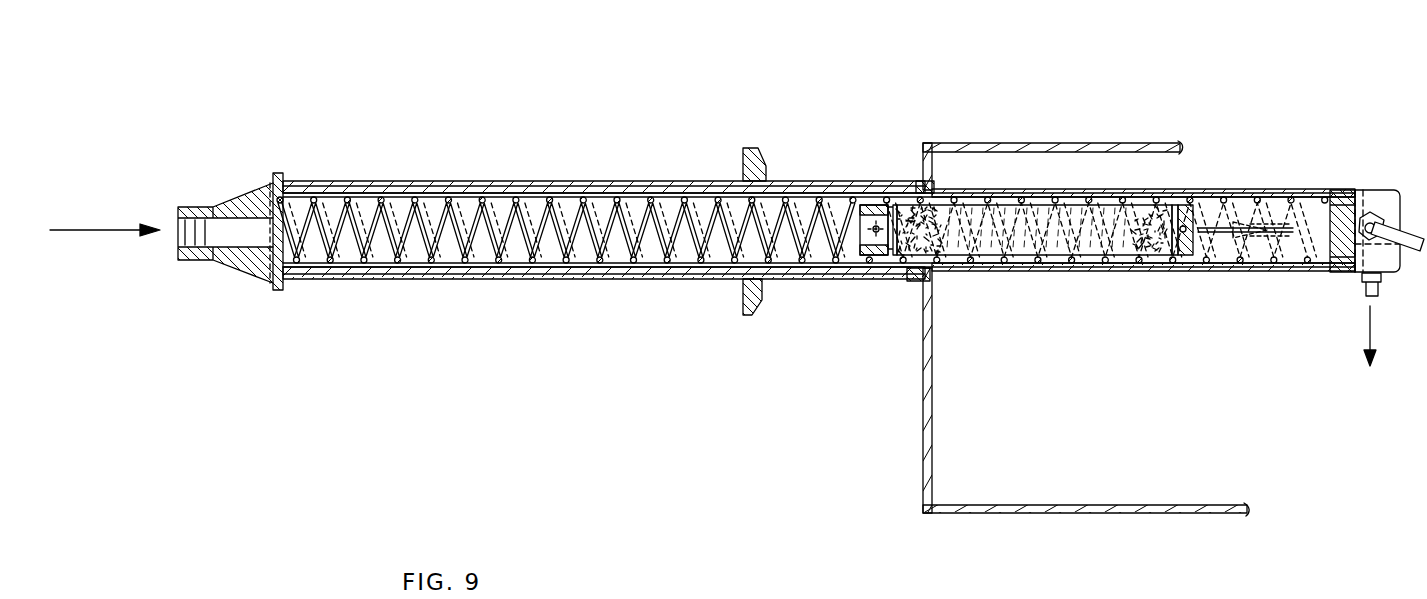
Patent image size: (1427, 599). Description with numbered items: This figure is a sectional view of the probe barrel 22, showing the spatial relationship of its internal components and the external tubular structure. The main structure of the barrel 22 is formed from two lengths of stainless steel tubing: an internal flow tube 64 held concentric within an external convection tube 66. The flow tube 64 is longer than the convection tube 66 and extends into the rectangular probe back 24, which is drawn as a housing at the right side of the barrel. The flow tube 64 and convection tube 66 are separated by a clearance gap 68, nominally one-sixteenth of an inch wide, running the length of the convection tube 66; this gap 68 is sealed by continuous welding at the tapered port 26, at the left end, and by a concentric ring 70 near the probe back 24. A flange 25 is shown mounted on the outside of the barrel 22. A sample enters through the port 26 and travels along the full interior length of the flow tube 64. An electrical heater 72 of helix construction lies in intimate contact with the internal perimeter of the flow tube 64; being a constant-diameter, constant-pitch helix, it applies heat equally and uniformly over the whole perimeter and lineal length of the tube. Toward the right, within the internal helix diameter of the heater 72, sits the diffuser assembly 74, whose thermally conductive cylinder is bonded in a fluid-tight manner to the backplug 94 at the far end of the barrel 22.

The probe barrel 22 is at (646, 98).
The probe back 24 is at (1103, 143).
The mounting flange 25 is at (752, 148).
The tapered port 26 is at (237, 268).
The internal flow tube 64 is at (352, 193).
The external convection tube 66 is at (598, 181).
The clearance gap 68 is at (517, 276).
The concentric ring 70 is at (906, 278).
The electrical heater 72 is at (687, 254).
The diffuser assembly 74 is at (1062, 260).
The backplug 94 is at (1403, 192).